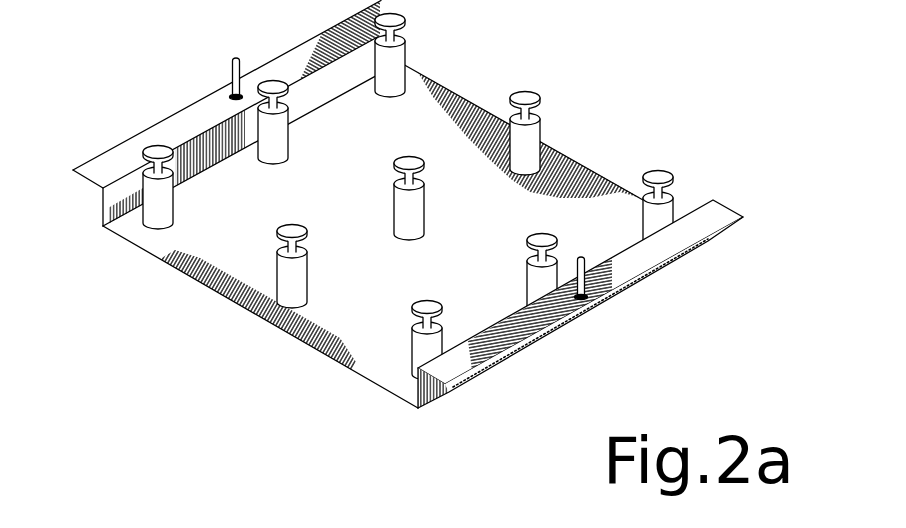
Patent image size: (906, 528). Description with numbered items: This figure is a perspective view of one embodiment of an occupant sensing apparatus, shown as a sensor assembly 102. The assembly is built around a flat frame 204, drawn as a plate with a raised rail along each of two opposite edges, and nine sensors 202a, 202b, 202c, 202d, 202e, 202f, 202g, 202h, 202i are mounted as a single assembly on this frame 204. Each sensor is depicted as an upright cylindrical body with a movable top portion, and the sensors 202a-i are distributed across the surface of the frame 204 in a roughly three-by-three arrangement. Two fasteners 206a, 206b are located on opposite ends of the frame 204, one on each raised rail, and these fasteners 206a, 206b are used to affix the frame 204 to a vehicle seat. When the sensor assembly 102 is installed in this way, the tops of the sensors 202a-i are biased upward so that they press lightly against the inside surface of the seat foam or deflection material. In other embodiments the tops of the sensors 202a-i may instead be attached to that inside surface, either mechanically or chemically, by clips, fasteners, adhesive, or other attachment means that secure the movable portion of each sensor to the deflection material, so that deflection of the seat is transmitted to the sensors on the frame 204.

The sensor assembly 102 is at (568, 94).
The frame 204 is at (212, 242).
The sensor 202a is at (280, 140).
The sensor 202b is at (405, 210).
The sensor 202c is at (530, 282).
The sensor 202d is at (397, 72).
The sensor 202e is at (537, 150).
The sensor 202f is at (670, 207).
The sensor 202g is at (145, 222).
The sensor 202h is at (257, 297).
The sensor 202i is at (420, 348).
The fastener 206a is at (232, 62).
The fastener 206b is at (587, 266).